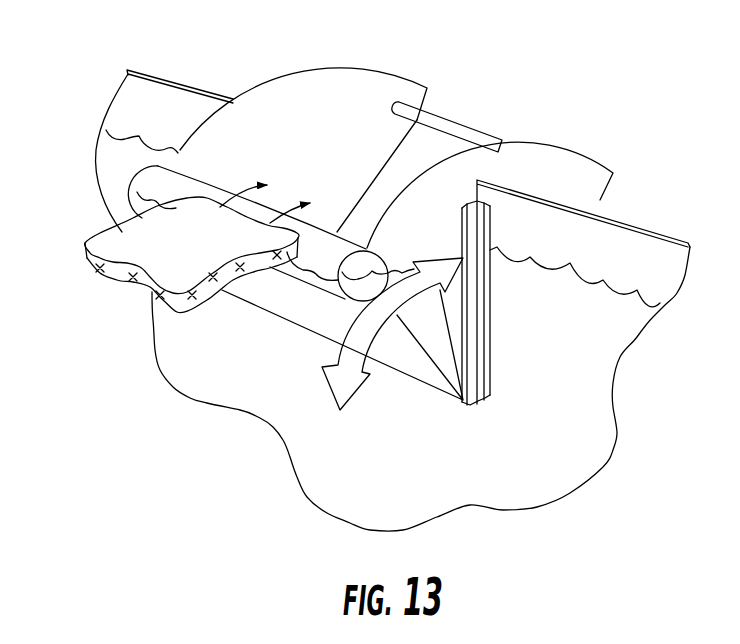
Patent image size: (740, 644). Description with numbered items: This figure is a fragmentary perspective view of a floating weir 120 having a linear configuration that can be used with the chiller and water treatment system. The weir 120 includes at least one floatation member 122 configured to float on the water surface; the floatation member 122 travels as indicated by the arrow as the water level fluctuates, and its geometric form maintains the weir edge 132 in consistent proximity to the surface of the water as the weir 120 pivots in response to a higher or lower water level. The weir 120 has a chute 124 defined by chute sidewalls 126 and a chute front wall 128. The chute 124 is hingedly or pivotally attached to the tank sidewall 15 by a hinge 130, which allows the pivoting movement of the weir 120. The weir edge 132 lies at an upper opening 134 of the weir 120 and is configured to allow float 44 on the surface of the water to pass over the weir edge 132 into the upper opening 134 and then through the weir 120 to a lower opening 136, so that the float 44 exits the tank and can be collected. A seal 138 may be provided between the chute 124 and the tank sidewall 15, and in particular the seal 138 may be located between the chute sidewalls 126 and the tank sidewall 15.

The tank sidewall 15 is at (618, 247).
The float 44 is at (122, 288).
The floating weir 120 is at (110, 202).
The floatation member 122 is at (283, 280).
The chute 124 is at (347, 130).
The chute sidewalls 126 is at (253, 85).
The chute front wall 128 is at (323, 317).
The hinge 130 is at (428, 388).
The weir edge 132 is at (208, 175).
The upper opening 134 is at (307, 147).
The lower opening 136 is at (372, 230).
The seal 138 is at (488, 228).